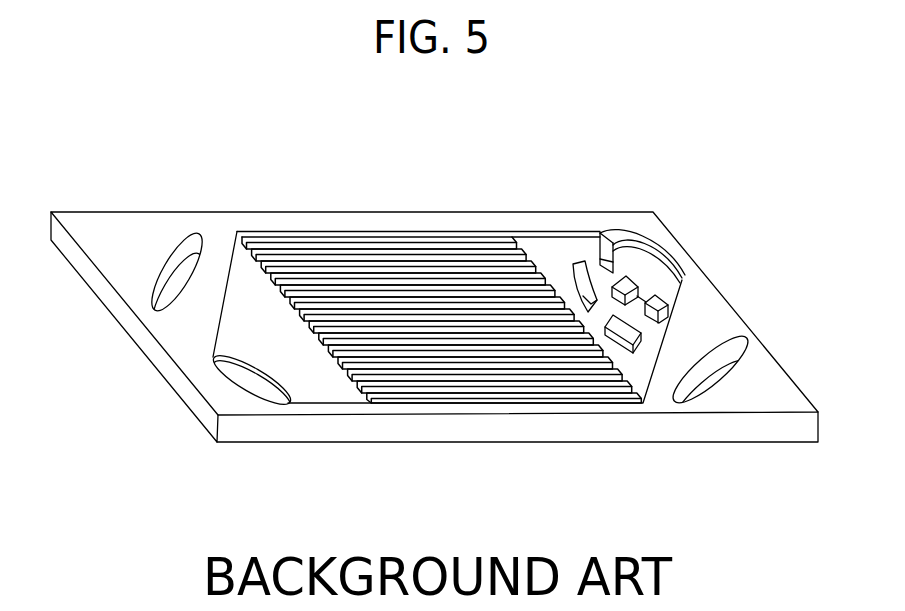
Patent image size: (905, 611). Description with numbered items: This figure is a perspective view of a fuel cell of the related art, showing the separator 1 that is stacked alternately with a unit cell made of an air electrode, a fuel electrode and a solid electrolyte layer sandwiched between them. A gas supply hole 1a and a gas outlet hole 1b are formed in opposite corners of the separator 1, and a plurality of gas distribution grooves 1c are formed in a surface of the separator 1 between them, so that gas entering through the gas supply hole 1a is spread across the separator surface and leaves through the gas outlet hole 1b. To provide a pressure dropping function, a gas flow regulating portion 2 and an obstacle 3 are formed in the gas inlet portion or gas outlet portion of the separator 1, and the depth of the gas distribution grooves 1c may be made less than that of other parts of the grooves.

The separator 1 is at (213, 196).
The gas supply hole 1a is at (648, 277).
The gas outlet hole 1b is at (257, 387).
The gas distribution grooves 1c is at (330, 258).
The gas flow regulating portion 2 is at (657, 303).
The obstacle 3 is at (578, 278).